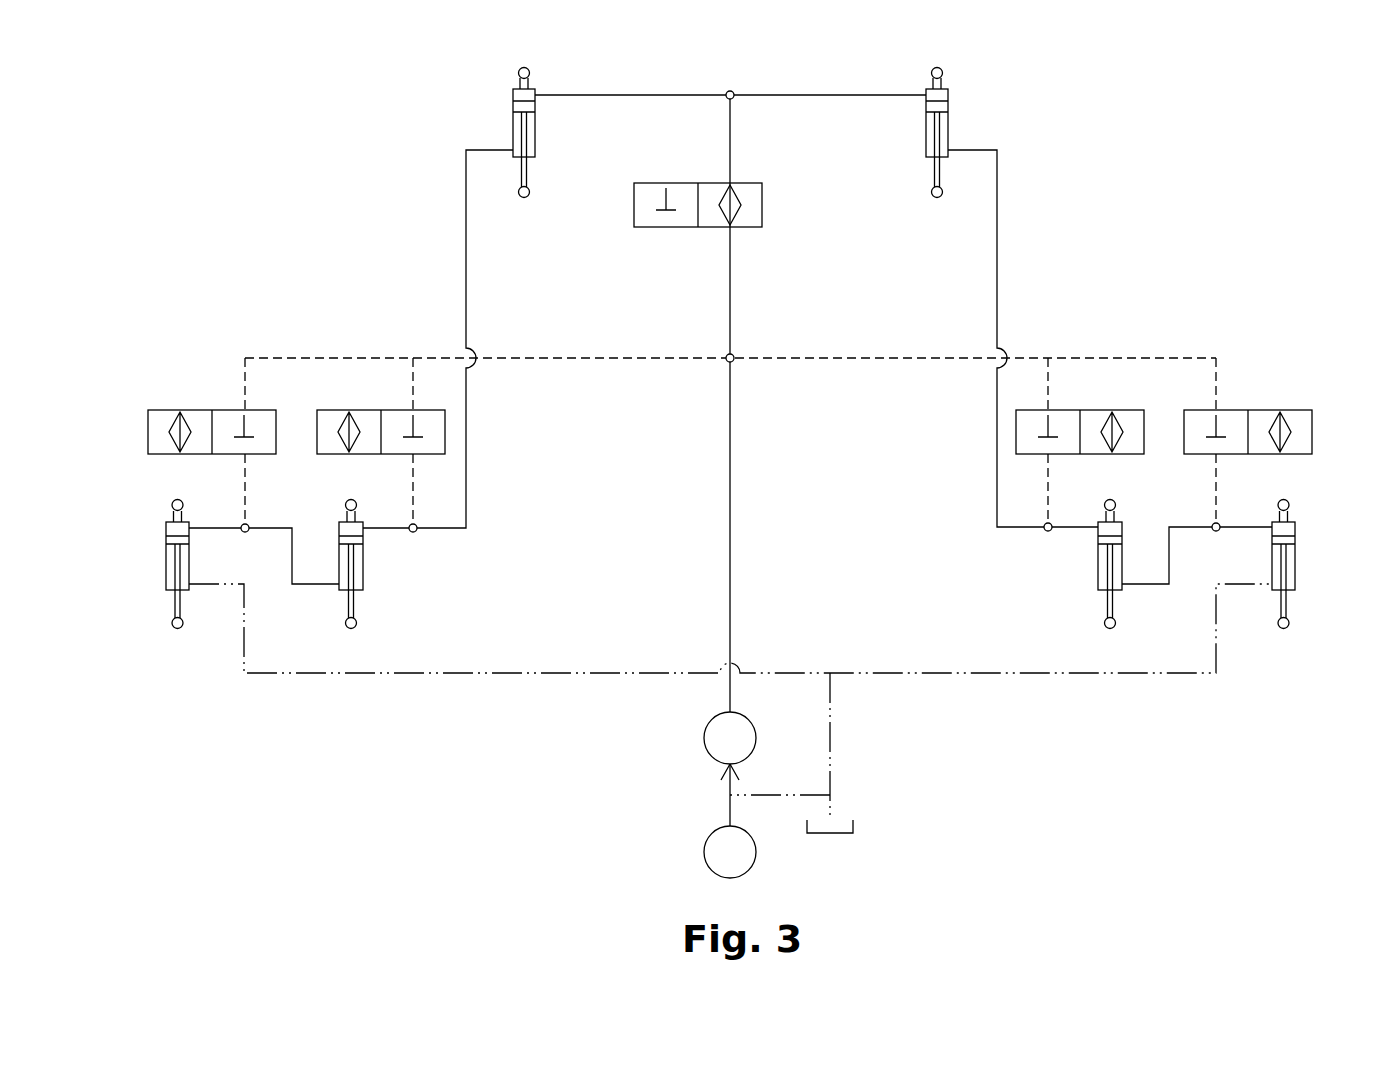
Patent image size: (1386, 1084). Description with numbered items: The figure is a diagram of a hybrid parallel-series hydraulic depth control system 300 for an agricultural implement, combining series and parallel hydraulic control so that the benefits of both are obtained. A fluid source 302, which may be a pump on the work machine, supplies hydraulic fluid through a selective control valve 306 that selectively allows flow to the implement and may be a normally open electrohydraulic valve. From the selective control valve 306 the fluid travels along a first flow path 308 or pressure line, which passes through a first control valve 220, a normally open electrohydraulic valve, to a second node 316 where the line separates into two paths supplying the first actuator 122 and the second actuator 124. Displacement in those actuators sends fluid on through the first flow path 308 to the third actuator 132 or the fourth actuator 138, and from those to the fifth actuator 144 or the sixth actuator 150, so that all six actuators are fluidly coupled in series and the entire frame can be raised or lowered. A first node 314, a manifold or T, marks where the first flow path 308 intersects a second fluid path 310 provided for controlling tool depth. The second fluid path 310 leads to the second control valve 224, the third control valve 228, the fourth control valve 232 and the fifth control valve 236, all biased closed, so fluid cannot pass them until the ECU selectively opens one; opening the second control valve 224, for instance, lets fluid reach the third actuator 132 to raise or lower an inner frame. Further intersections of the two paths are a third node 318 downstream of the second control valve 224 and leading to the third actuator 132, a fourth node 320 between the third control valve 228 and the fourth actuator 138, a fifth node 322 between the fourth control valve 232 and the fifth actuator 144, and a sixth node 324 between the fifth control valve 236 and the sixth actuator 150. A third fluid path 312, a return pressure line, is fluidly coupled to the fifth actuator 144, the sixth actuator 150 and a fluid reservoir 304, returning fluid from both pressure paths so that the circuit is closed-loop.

The hybrid parallel-series hydraulic depth control system 300 is at (1212, 166).
The first actuator 122 is at (512, 118).
The second actuator 124 is at (950, 118).
The third actuator 132 is at (365, 571).
The fourth actuator 138 is at (1096, 570).
The fifth actuator 144 is at (164, 560).
The sixth actuator 150 is at (1297, 562).
The first control valve 220 is at (668, 229).
The second control valve 224 is at (363, 409).
The third control valve 228 is at (1097, 409).
The fourth control valve 232 is at (194, 409).
The fifth control valve 236 is at (1266, 409).
The fluid source 302 is at (704, 852).
The fluid reservoir 304 is at (848, 838).
The selective control valve 306 is at (704, 739).
The first flow path 308 is at (732, 136).
The second fluid path 310 is at (581, 356).
The third fluid path 312 is at (483, 675).
The first node 314 is at (733, 355).
The second node 316 is at (733, 92).
The third node 318 is at (415, 531).
The fourth node 320 is at (1046, 531).
The fifth node 322 is at (242, 525).
The sixth node 324 is at (1219, 525).